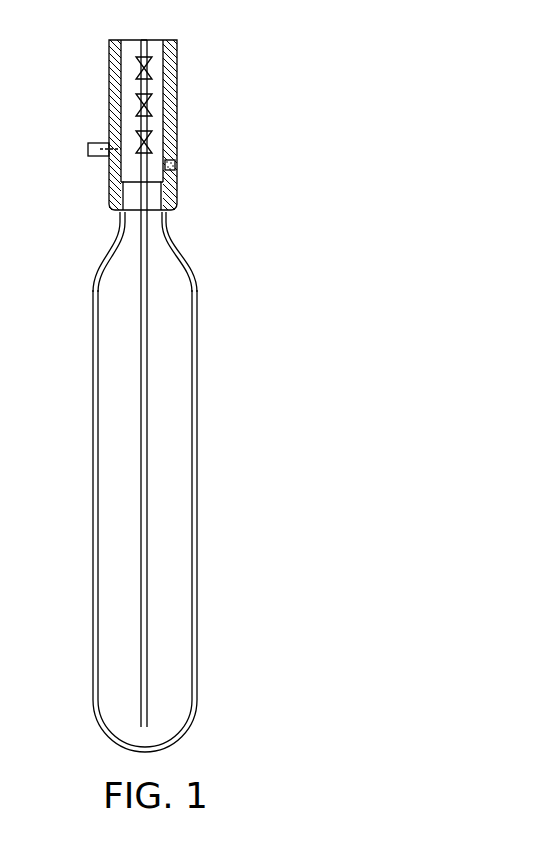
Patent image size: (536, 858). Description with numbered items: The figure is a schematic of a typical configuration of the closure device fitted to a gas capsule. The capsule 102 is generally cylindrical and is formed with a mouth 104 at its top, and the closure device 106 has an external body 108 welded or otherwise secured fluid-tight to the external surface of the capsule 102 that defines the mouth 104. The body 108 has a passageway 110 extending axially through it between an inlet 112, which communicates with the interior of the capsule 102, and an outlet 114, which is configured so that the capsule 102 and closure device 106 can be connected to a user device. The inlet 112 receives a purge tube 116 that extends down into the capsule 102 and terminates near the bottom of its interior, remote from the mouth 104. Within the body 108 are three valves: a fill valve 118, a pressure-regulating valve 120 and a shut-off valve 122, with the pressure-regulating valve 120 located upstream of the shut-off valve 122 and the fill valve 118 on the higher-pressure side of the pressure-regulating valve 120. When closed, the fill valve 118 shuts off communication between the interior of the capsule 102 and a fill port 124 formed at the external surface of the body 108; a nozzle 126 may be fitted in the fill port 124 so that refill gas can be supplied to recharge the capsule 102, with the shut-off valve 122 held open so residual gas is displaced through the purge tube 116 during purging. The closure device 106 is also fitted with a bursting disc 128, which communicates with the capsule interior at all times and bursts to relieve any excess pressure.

The capsule 102 is at (204, 557).
The mouth 104 is at (113, 209).
The closure device 106 is at (108, 93).
The external body 108 is at (177, 78).
The passageway 110 is at (164, 118).
The inlet 112 is at (132, 172).
The outlet 114 is at (144, 40).
The purge tube 116 is at (141, 458).
The fill valve 118 is at (151, 143).
The pressure-regulating valve 120 is at (149, 107).
The shut-off valve 122 is at (149, 70).
The fill port 124 is at (101, 143).
The nozzle 126 is at (88, 150).
The bursting disc 128 is at (175, 167).